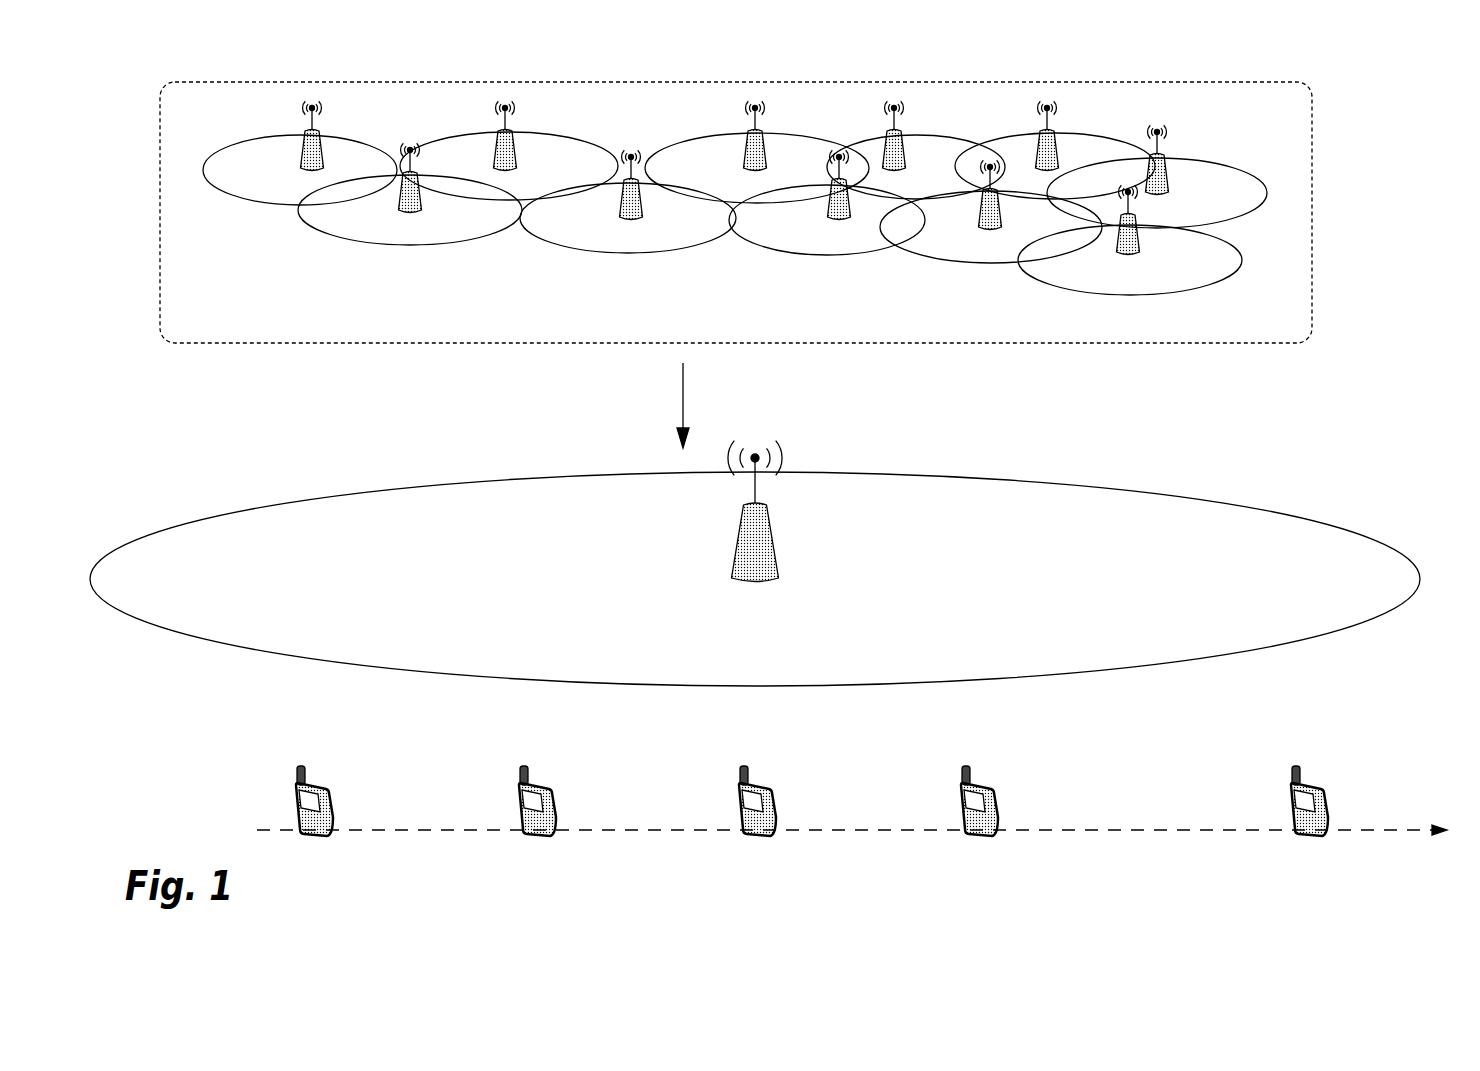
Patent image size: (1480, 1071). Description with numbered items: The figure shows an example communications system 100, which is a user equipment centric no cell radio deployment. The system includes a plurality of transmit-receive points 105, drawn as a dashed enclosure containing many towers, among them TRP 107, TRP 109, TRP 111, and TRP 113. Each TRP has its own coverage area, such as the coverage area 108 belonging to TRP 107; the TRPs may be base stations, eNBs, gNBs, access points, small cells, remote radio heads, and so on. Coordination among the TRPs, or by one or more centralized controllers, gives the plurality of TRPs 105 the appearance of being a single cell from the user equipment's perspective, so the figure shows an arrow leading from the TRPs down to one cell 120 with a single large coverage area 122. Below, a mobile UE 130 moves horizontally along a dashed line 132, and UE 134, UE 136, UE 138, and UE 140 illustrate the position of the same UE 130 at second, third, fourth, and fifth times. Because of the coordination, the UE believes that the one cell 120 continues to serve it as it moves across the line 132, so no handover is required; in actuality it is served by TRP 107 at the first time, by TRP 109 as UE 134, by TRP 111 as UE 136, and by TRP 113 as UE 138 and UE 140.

The communications system 100 is at (1396, 60).
The plurality of transmit-receive points 105 is at (405, 82).
The TRP 107 is at (398, 207).
The coverage area 108 is at (482, 226).
The TRP 109 is at (632, 218).
The TRP 111 is at (840, 218).
The TRP 113 is at (1240, 254).
The cell 120 is at (738, 538).
The coverage area 122 is at (168, 592).
The UE 130 is at (295, 790).
The dashed line 132 is at (440, 830).
The UE 134 is at (518, 790).
The UE 136 is at (738, 790).
The UE 138 is at (960, 790).
The UE 140 is at (1322, 792).